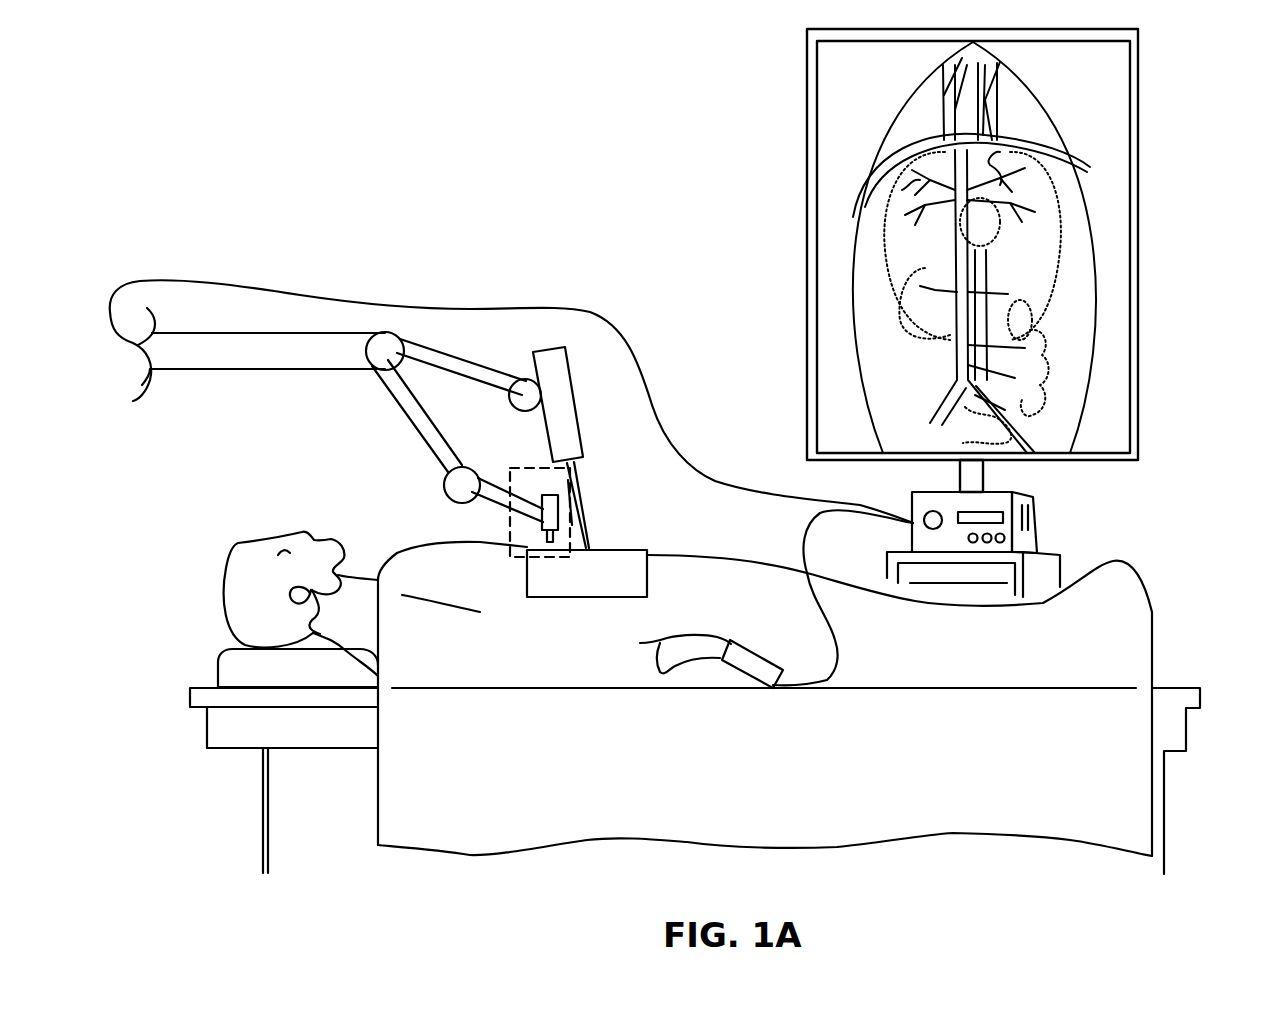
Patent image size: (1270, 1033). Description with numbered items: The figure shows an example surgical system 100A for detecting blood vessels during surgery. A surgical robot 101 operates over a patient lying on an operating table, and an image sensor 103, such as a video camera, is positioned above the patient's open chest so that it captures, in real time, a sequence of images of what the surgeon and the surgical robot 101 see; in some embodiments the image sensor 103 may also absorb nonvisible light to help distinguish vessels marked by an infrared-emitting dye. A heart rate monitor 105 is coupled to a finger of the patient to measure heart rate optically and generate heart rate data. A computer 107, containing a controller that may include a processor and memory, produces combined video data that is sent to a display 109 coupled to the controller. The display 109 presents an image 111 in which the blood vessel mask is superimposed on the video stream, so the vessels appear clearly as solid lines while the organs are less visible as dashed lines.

The surgical system 100A is at (386, 157).
The surgical robot 101 is at (302, 358).
The image sensor 103 is at (510, 534).
The heart rate monitor 105 is at (747, 662).
The computer 107 is at (1037, 522).
The display 109 is at (1138, 402).
The image 111 is at (921, 111).